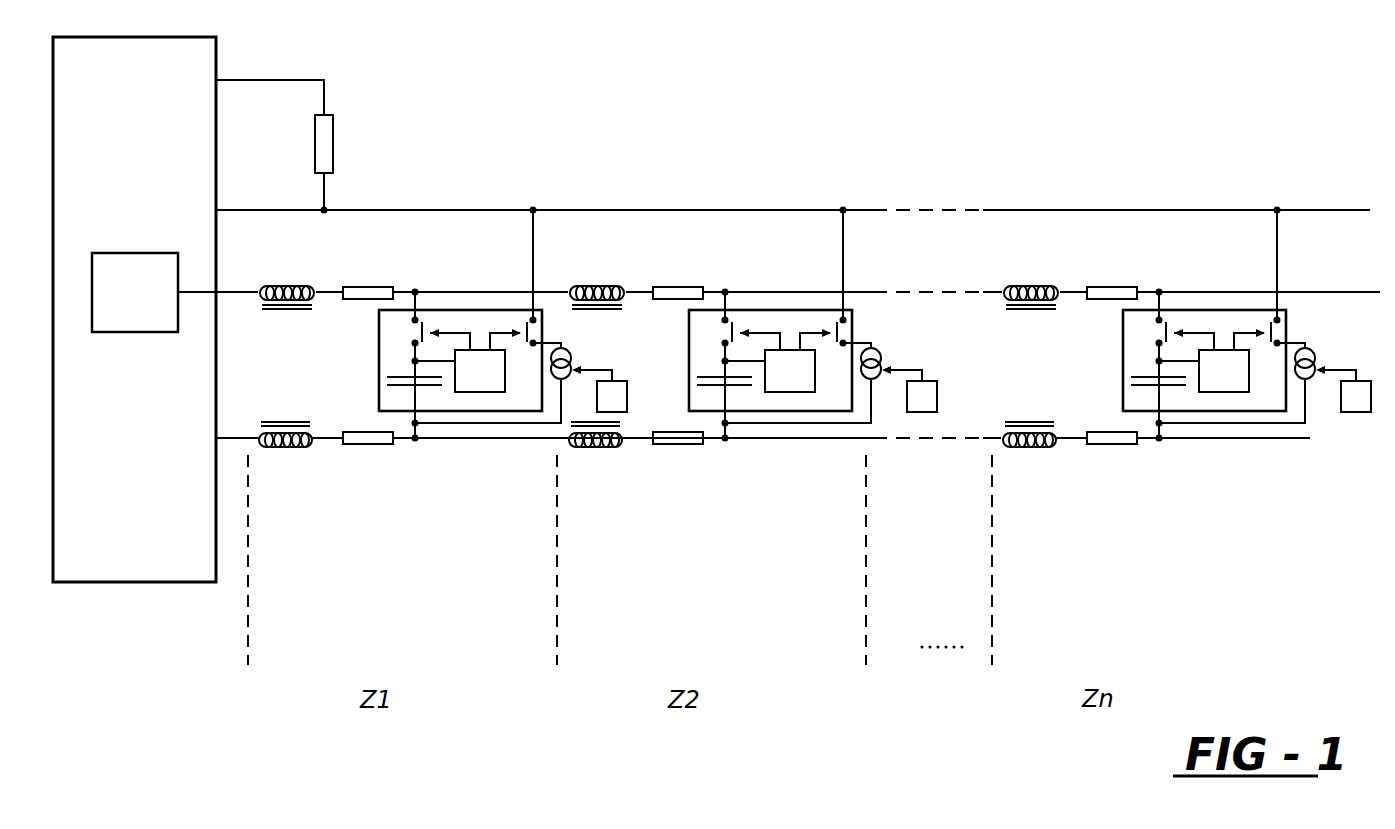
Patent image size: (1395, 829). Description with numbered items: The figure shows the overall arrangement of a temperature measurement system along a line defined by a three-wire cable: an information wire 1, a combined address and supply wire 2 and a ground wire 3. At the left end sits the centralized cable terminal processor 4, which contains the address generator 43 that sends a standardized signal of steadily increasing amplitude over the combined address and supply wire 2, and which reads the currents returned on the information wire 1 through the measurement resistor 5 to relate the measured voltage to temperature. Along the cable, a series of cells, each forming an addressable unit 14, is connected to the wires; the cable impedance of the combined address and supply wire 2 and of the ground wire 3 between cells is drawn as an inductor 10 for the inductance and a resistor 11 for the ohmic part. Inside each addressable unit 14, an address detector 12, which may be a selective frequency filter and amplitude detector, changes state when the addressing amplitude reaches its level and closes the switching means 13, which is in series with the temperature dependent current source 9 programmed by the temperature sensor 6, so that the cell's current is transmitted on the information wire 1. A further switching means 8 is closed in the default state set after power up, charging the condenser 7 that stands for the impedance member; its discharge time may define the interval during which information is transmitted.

The information wire 1 is at (1123, 190).
The combined address and supply wire 2 is at (1372, 280).
The ground wire 3 is at (1284, 443).
The cable terminal processor 4 is at (138, 165).
The address generator 43 is at (152, 310).
The measurement resistor 5 is at (340, 133).
The temperature sensor 6 is at (618, 410).
The condenser 7 is at (397, 388).
The switching means 8 is at (408, 336).
The current source 9 is at (575, 351).
The inductor 10 is at (288, 278).
The resistor 11 is at (421, 497).
The address detector 12 is at (493, 388).
The switching means 13 is at (537, 318).
The addressable unit 14 is at (444, 306).